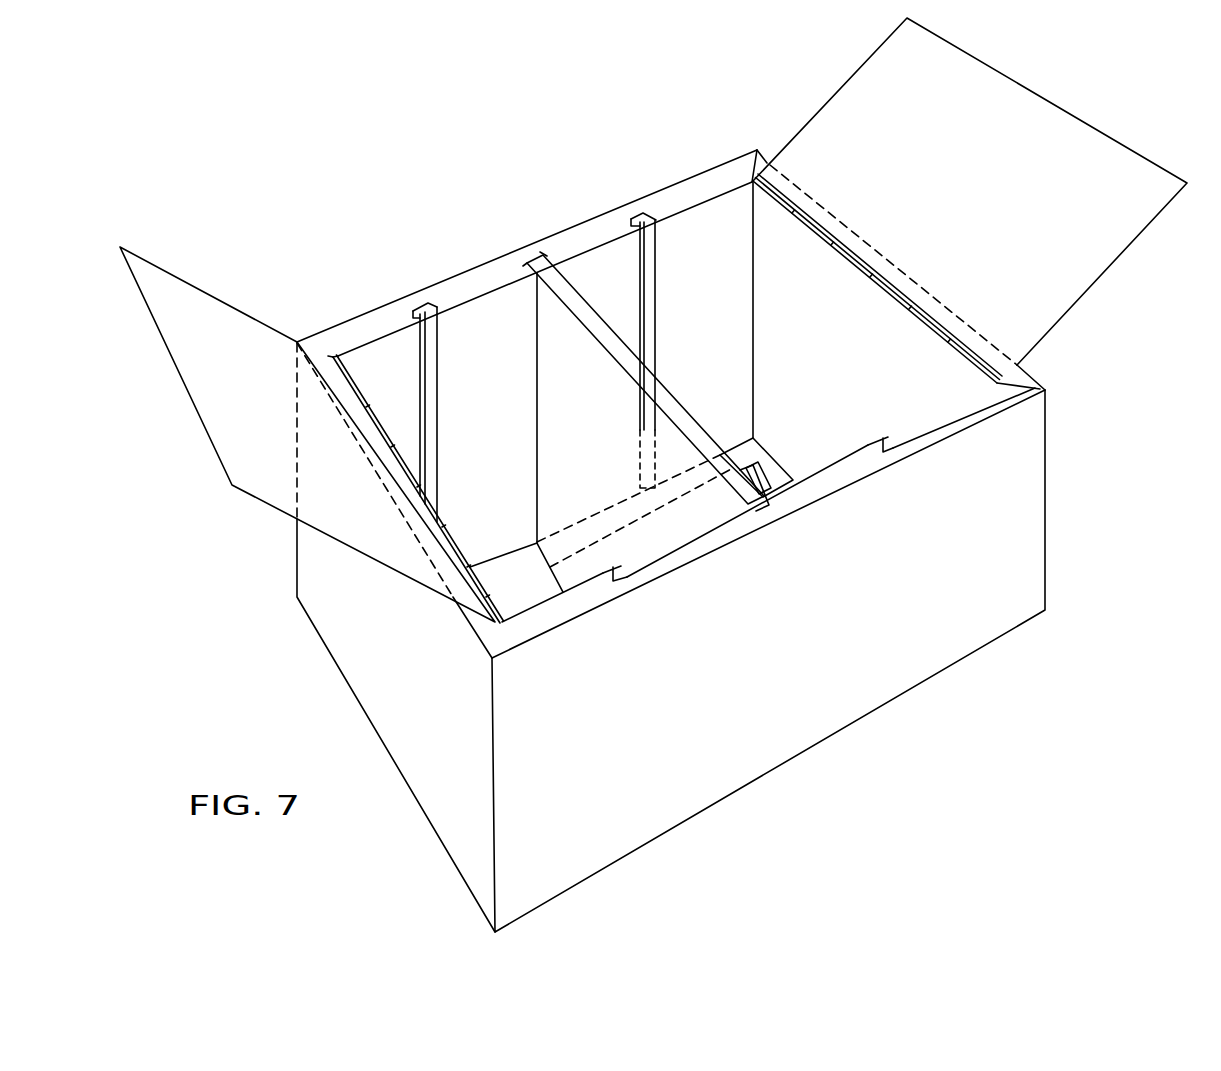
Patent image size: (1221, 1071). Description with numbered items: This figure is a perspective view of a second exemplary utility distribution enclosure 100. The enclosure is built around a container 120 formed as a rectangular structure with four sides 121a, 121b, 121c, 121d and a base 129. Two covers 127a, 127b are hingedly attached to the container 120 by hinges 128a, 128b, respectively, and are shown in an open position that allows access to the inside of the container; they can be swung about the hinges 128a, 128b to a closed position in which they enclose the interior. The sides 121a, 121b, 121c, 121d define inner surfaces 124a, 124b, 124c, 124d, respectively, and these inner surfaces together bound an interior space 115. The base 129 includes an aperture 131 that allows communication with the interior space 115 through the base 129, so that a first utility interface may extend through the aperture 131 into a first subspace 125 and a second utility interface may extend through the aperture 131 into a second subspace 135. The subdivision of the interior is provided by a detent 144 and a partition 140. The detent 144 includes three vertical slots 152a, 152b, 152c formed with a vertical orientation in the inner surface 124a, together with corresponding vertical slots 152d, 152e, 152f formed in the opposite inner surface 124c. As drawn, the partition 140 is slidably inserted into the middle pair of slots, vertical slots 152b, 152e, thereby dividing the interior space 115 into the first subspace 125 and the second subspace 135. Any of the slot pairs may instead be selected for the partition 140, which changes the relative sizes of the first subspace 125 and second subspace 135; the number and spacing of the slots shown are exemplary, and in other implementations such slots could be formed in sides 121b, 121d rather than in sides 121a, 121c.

The utility distribution enclosure 100 is at (306, 104).
The container 120 is at (440, 292).
The side 121a is at (582, 237).
The side 121b is at (857, 243).
The side 121c is at (928, 625).
The side 121d is at (313, 561).
The cover 127a is at (186, 301).
The cover 127b is at (1030, 112).
The hinge 128a is at (378, 418).
The hinge 128b is at (866, 291).
The inner surface 124a is at (705, 226).
The inner surface 124b is at (935, 372).
The inner surface 124c is at (674, 530).
The inner surface 124d is at (507, 607).
The base 129 is at (765, 468).
The aperture 131 is at (518, 589).
The partition 140 is at (585, 381).
The detent 144 is at (646, 112).
The vertical slot 152a is at (645, 210).
The vertical slot 152b is at (529, 262).
The vertical slot 152c is at (425, 300).
The vertical slot 152d is at (884, 452).
The vertical slot 152e is at (751, 513).
The vertical slot 152f is at (617, 582).
The interior space 115 is at (502, 380).
The first subspace 125 is at (499, 455).
The second subspace 135 is at (722, 335).